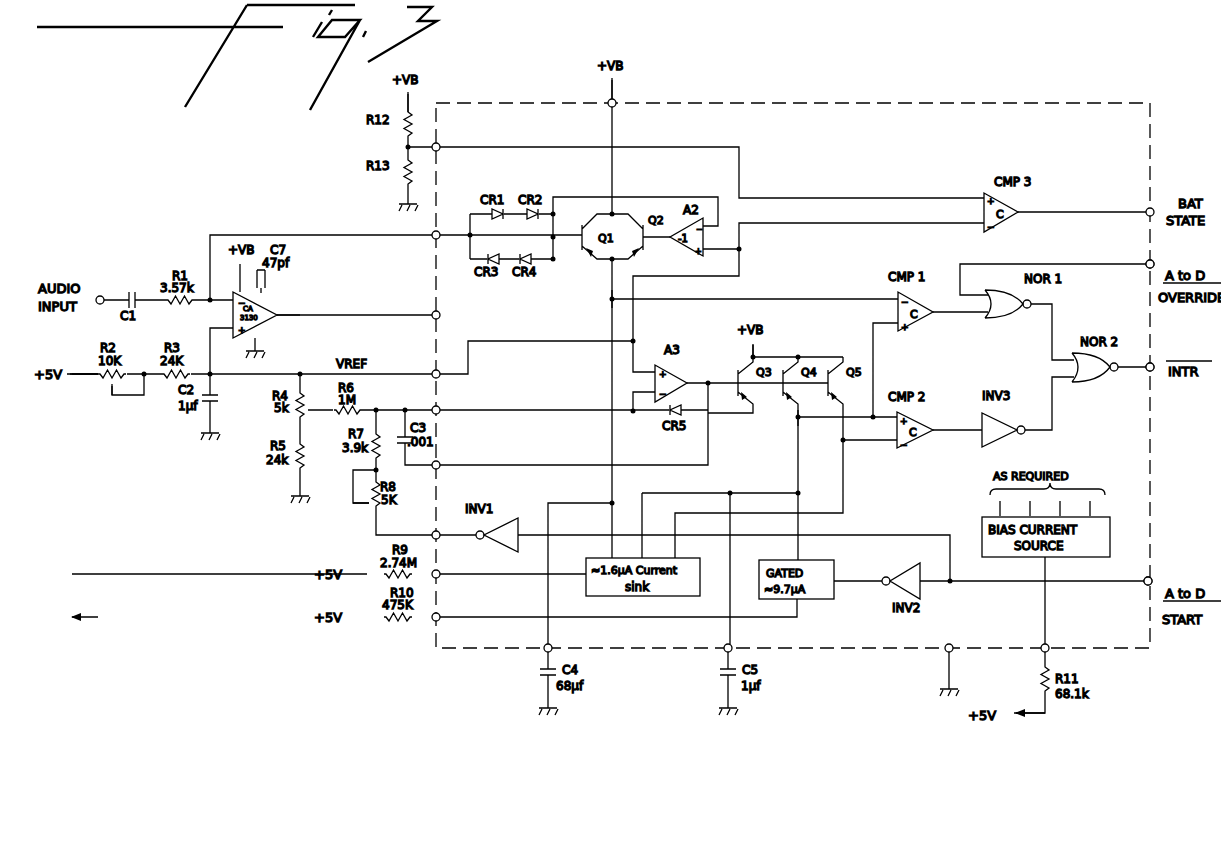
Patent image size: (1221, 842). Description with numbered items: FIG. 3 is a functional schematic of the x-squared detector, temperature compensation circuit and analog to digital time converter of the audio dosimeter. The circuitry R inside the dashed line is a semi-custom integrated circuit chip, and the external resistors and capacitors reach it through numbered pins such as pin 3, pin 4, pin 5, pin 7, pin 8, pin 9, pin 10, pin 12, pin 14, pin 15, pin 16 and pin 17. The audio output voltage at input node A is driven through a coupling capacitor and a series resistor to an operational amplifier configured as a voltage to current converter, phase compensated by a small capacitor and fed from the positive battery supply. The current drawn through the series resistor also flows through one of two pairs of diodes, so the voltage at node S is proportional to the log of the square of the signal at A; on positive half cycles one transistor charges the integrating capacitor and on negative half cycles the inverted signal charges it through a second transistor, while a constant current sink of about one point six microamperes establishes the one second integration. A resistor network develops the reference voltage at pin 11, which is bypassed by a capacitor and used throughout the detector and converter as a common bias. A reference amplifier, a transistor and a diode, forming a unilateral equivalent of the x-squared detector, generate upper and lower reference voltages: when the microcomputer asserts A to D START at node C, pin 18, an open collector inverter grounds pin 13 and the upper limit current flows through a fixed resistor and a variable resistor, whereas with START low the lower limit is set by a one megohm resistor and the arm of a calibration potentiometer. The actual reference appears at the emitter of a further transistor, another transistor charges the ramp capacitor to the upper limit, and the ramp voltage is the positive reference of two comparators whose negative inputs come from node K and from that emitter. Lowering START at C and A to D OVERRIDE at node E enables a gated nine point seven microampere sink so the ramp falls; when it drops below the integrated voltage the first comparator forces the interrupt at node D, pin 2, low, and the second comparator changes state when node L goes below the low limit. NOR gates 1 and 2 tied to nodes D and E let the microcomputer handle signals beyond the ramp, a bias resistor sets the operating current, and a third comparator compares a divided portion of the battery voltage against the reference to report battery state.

The audio input node A is at (102, 283).
The detector output node S is at (304, 298).
The node K is at (596, 300).
The node L is at (781, 423).
The A to D OVERRIDE node E is at (1168, 259).
The interrupt node D is at (1168, 353).
The A to D START node C is at (1168, 572).
The integrated circuit chip circuitry R is at (1116, 648).
The NOR gate 1 is at (1155, 259).
The interrupt pin 2 is at (1153, 358).
The pin 3 is at (431, 581).
The pin 4 is at (618, 97).
The pin 5 is at (487, 481).
The pin 7 is at (431, 228).
The pin 8 is at (431, 472).
The pin 9 is at (431, 402).
The pin 10 is at (1035, 655).
The reference voltage pin 11 is at (429, 367).
The pin 12 is at (940, 655).
The upper limit select pin 13 is at (428, 527).
The pin 14 is at (720, 654).
The integrated circuit chip 15 is at (428, 625).
The pin 16 is at (429, 139).
The pin 17 is at (1159, 201).
The A to D START pin 18 is at (1156, 571).